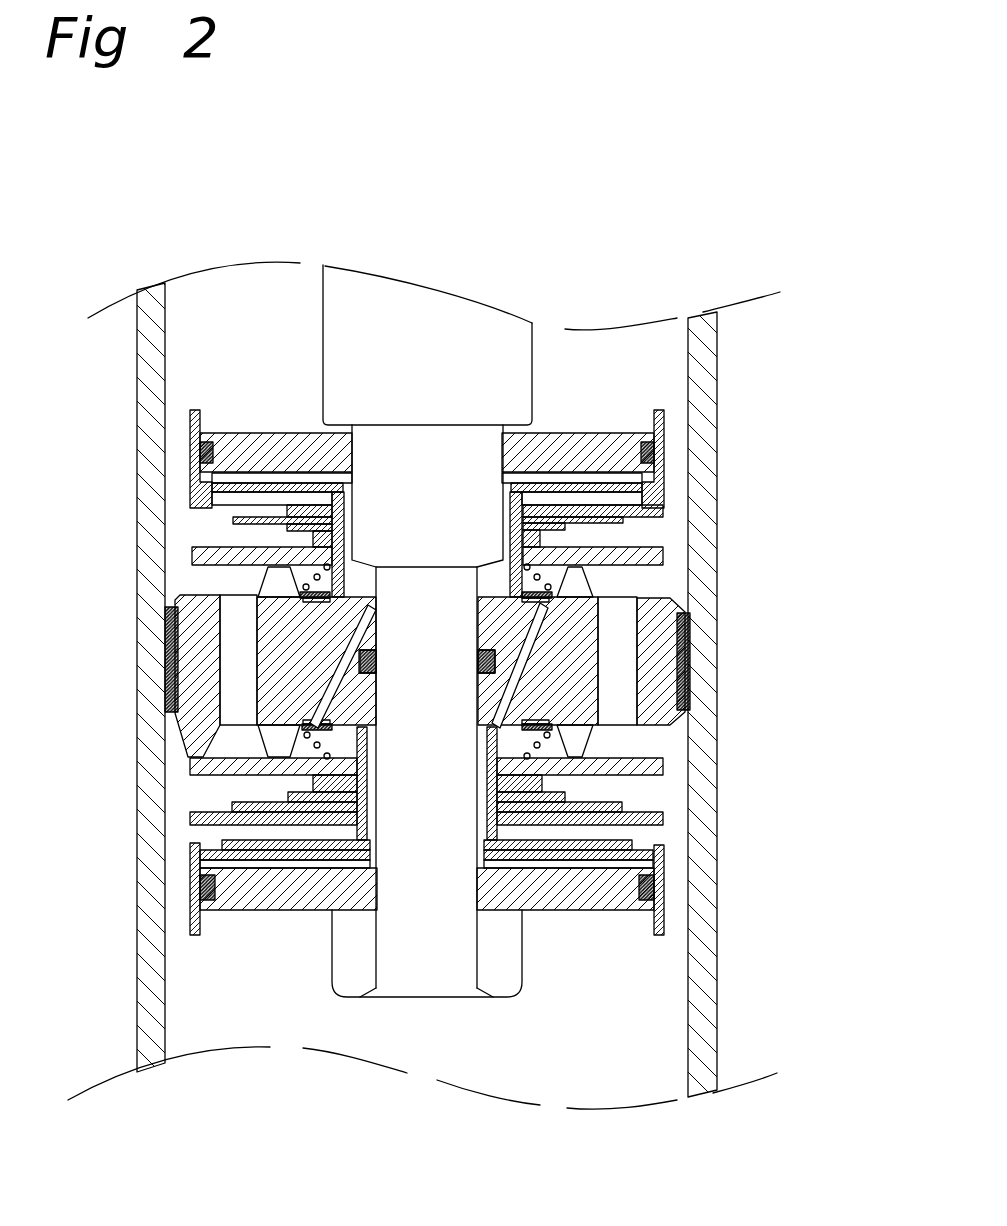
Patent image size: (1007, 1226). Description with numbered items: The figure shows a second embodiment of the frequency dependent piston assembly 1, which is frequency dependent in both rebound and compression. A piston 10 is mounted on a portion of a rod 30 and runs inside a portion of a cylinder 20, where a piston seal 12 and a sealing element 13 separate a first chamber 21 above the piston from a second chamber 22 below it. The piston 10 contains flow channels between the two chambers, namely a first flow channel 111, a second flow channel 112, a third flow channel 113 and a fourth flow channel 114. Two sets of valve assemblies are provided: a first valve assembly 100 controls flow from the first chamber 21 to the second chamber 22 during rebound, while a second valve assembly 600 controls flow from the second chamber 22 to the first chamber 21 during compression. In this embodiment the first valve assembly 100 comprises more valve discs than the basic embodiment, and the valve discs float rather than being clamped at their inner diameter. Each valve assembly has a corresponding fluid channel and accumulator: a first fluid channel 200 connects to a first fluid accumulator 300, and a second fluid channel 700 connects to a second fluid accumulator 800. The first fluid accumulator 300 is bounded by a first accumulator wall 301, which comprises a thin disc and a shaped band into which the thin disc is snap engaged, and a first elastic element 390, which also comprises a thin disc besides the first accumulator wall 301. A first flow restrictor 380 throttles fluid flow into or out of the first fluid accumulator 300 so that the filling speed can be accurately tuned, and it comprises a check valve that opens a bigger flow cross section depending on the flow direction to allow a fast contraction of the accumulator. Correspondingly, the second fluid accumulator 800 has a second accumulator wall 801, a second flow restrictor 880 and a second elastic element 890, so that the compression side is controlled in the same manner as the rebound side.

The frequency dependent piston assembly 1 is at (620, 247).
The piston 10 is at (668, 645).
The piston seal 12 is at (688, 710).
The sealing element 13 is at (507, 660).
The portion of a cylinder 20 is at (160, 1004).
The first chamber 21 is at (245, 312).
The second chamber 22 is at (595, 1052).
The portion of a rod 30 is at (345, 358).
The first valve assembly 100 is at (603, 802).
The first flow channel 111 is at (507, 678).
The second flow channel 112 is at (355, 623).
The third flow channel 113 is at (233, 668).
The fourth flow channel 114 is at (618, 606).
The first fluid channel 200 is at (345, 781).
The first fluid accumulator 300 is at (662, 874).
The first accumulator wall 301 is at (190, 856).
The first flow restrictor 380 is at (560, 584).
The first elastic element 390 is at (213, 840).
The second valve assembly 600 is at (243, 520).
The second fluid channel 700 is at (322, 537).
The second fluid accumulator 800 is at (215, 478).
The second accumulator wall 801 is at (643, 505).
The second flow restrictor 880 is at (290, 743).
The second elastic element 890 is at (499, 492).